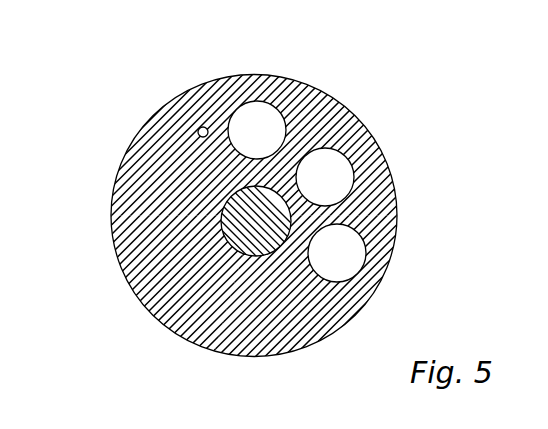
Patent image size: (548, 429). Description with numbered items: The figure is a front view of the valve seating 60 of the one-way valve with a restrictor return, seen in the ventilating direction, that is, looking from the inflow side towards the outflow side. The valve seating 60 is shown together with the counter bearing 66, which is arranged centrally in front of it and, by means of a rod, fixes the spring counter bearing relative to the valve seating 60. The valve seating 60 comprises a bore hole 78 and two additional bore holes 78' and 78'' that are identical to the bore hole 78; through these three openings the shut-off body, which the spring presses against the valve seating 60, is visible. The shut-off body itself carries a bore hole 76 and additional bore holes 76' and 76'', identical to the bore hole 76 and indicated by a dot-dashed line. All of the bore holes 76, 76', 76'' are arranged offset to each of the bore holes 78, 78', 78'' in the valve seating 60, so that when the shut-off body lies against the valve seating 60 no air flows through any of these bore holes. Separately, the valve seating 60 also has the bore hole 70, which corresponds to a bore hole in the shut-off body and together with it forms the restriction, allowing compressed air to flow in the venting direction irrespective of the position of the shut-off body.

The valve seating 60 is at (352, 120).
The counter bearing 66 is at (274, 238).
The bore hole 70 is at (200, 127).
The bore hole 76 is at (274, 238).
The additional bore hole 76' is at (274, 210).
The additional bore hole 76'' is at (274, 210).
The bore hole 78 is at (293, 101).
The additional bore hole 78' is at (374, 170).
The additional bore hole 78'' is at (385, 250).